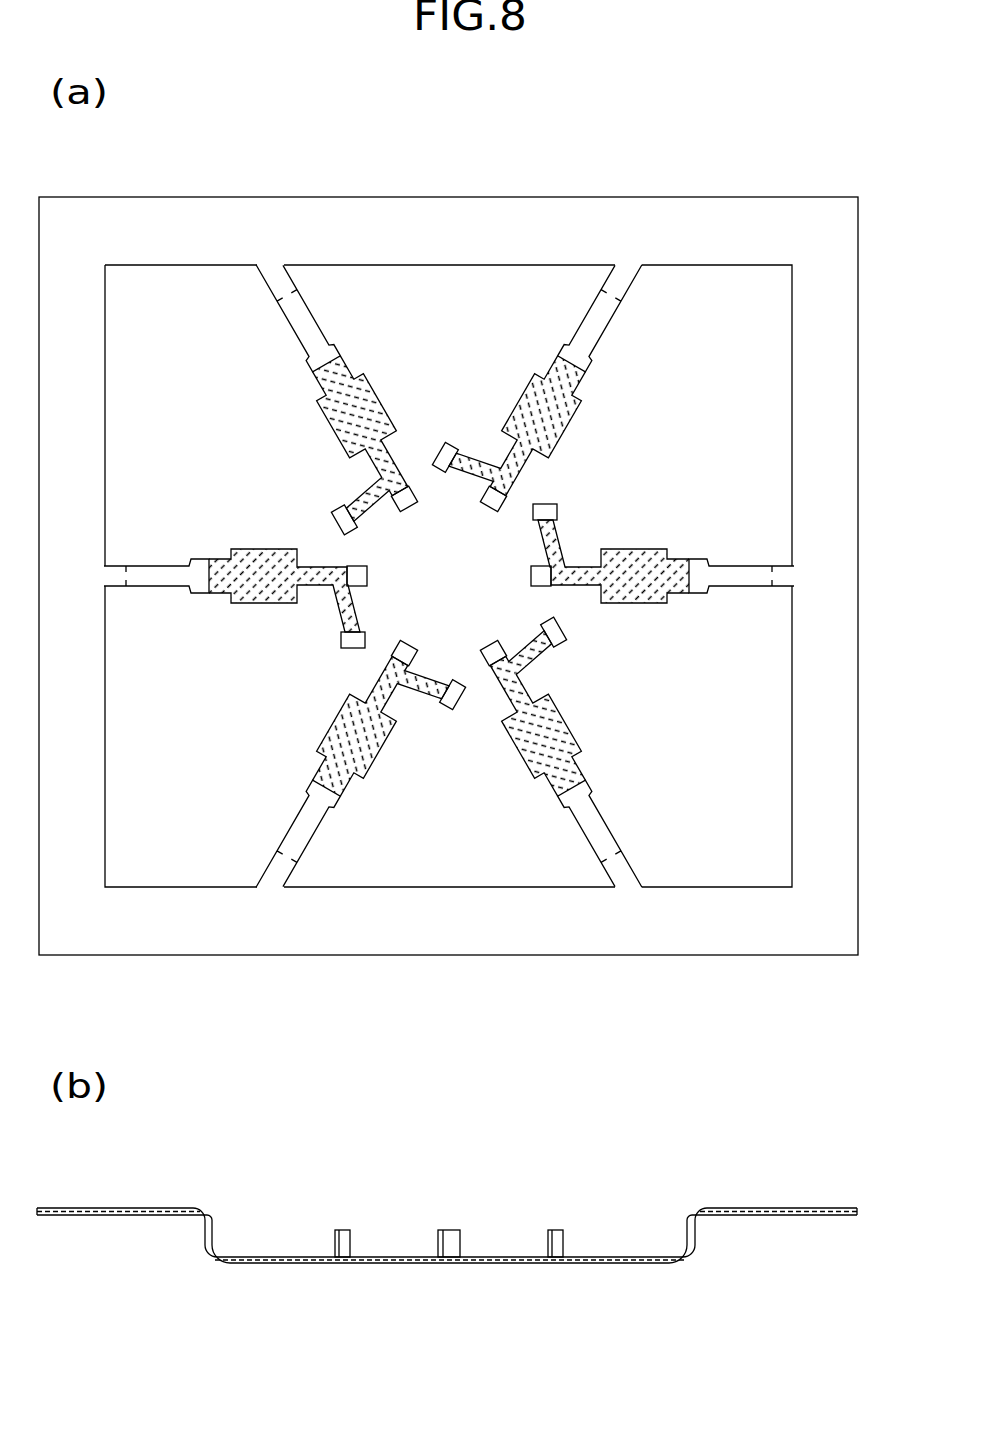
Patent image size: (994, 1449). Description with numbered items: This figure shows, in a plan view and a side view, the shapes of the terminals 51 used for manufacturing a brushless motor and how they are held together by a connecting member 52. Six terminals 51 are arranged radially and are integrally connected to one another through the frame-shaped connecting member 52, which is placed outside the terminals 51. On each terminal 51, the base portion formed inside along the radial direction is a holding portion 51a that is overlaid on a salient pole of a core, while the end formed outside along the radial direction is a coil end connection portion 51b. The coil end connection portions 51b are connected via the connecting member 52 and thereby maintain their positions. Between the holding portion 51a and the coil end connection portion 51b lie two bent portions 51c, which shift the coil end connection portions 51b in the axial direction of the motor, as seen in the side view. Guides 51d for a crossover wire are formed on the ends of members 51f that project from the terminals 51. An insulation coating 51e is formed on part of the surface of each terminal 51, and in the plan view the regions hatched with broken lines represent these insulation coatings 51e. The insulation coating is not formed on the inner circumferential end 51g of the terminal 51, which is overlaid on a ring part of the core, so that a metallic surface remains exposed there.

The connecting member 52 is at (515, 207).
The terminal 51 is at (332, 358).
The holding portion 51a is at (242, 607).
The coil end connection portion 51b is at (153, 573).
The bent portion 51c is at (214, 1205).
The guide 51d is at (567, 543).
The insulation coating 51e is at (262, 552).
The member 51f is at (568, 543).
The inner circumferential end 51g is at (532, 578).